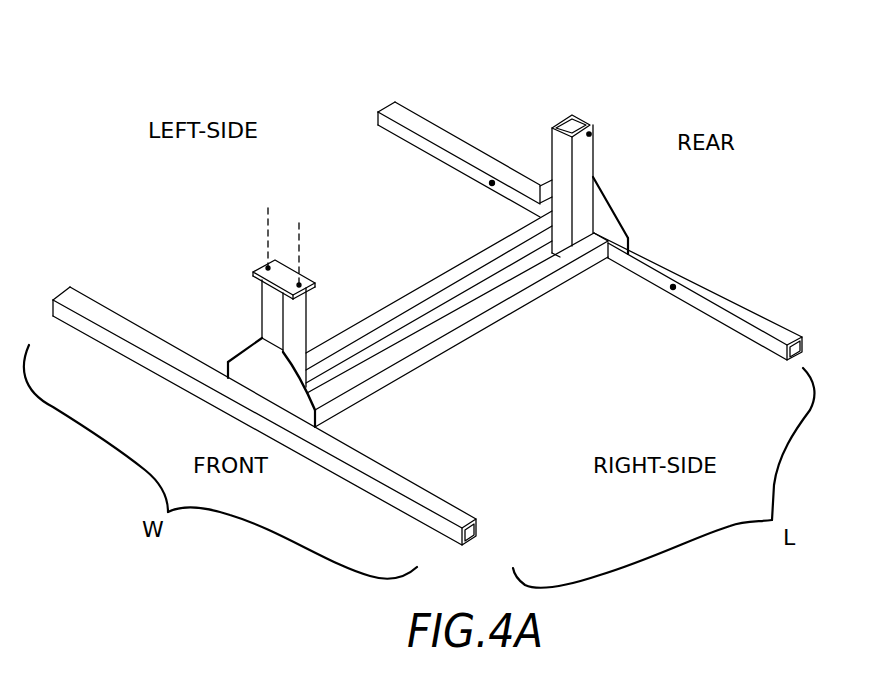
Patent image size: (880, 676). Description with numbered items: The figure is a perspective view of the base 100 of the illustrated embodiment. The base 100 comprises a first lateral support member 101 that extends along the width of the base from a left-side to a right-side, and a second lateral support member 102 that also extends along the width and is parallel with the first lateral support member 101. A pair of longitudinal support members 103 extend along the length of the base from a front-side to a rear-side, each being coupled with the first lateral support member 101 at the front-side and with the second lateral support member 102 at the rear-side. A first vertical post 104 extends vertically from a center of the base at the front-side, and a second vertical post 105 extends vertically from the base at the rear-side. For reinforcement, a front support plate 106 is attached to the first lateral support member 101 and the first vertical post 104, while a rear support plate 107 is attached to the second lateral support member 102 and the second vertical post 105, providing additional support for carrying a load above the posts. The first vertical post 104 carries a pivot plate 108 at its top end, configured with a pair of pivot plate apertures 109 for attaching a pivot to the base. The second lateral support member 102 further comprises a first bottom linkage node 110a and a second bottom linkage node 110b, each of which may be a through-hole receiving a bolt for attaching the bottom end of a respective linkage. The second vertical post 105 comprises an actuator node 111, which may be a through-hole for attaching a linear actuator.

The base 100 is at (315, 70).
The first lateral support member 101 is at (420, 495).
The second lateral support member 102 is at (763, 321).
The longitudinal support members 103 is at (458, 272).
The first vertical post 104 is at (267, 317).
The second vertical post 105 is at (553, 148).
The front support plate 106 is at (238, 370).
The rear support plate 107 is at (615, 231).
The pivot plate 108 is at (310, 280).
The pivot plate apertures 109 is at (300, 213).
The first bottom linkage node 110a is at (673, 289).
The second bottom linkage node 110b is at (490, 183).
The actuator node 111 is at (591, 134).